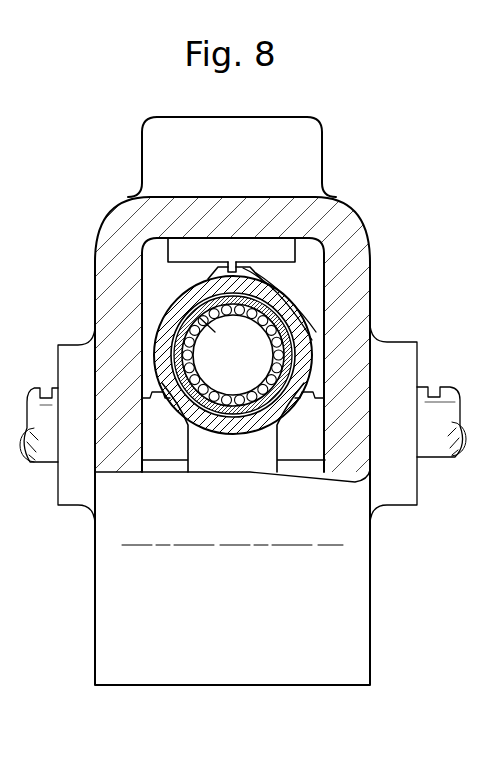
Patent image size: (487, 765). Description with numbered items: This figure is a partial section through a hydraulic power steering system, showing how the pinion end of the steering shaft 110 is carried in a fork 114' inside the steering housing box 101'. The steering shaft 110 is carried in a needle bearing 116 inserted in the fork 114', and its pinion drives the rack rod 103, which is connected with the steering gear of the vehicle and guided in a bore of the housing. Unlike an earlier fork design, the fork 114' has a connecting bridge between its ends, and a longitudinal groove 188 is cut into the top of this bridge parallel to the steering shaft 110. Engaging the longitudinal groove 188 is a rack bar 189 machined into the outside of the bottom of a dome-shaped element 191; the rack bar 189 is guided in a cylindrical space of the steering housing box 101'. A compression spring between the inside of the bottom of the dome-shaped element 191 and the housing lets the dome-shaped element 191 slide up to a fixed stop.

The steering housing box 101' is at (243, 401).
The dome-shaped element 191 is at (198, 250).
The rack bar 189 is at (232, 268).
The longitudinal groove 188 is at (258, 276).
The fork 114' is at (332, 325).
The steering shaft 110 is at (196, 292).
The needle bearing 116 is at (190, 410).
The rack rod 103 is at (433, 443).